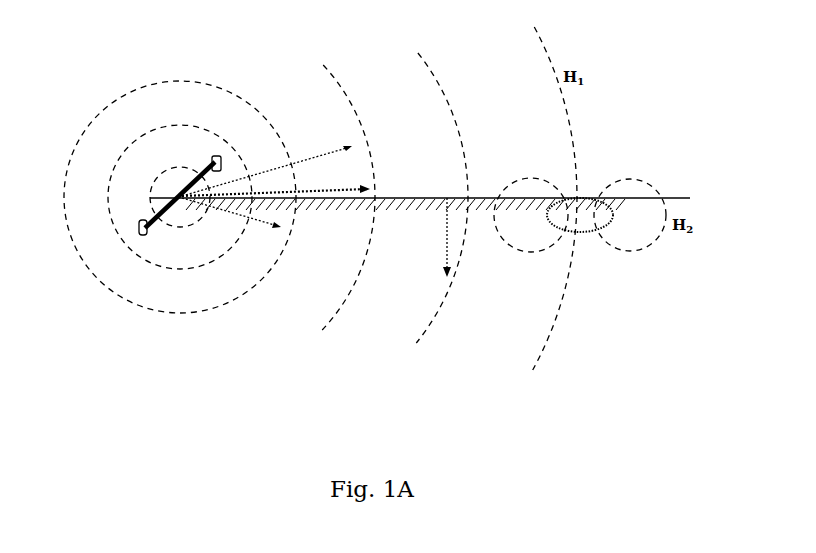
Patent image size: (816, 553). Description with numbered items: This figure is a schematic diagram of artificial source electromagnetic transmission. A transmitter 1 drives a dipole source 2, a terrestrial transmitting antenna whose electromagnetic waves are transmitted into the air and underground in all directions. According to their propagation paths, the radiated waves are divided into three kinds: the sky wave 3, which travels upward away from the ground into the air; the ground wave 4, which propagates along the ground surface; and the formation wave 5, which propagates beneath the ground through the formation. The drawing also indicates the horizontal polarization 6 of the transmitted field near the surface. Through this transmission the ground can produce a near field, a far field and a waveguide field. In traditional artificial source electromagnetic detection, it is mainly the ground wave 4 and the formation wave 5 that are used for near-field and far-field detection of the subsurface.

The transmitter 1 is at (160, 197).
The dipole source 2 is at (138, 237).
The sky wave 3 is at (312, 157).
The ground wave 4 is at (345, 188).
The formation wave 5 is at (257, 222).
The horizontal polarization 6 is at (445, 262).